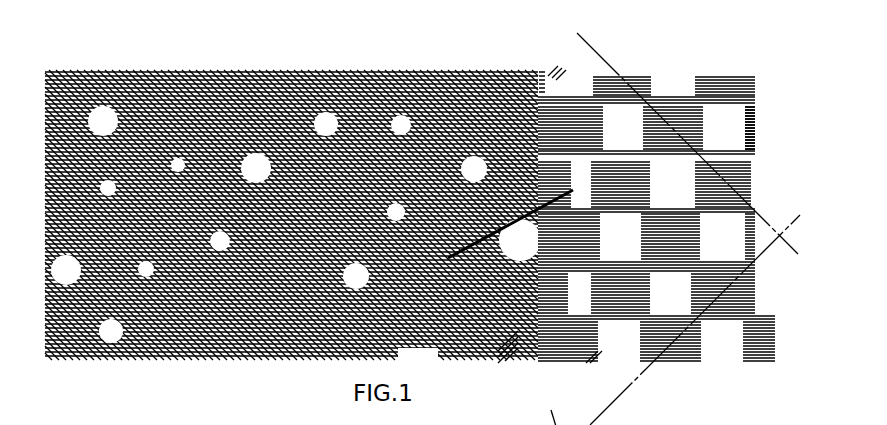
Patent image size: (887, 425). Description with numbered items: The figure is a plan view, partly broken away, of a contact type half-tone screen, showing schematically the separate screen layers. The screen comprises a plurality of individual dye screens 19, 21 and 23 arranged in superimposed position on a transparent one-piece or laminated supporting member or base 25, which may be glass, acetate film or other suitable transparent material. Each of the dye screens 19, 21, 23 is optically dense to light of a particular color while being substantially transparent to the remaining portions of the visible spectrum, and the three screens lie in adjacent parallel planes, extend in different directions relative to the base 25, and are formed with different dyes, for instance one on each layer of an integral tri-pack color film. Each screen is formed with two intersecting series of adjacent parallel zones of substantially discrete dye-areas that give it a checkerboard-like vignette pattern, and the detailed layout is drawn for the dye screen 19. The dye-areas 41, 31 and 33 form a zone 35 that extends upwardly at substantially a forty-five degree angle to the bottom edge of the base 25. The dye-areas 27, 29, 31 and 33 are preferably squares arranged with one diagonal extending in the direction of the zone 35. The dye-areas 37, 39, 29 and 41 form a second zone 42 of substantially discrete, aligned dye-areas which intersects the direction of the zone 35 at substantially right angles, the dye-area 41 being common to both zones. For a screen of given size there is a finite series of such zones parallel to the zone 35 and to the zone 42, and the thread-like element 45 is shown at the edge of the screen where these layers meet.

The dye screen 19 is at (752, 82).
The dye screen 21 is at (504, 357).
The dye screen 23 is at (265, 63).
The supporting member or base 25 is at (750, 302).
The dye-area 27 is at (757, 128).
The dye-area 29 is at (737, 167).
The dye-area 31 is at (697, 277).
The dye-area 33 is at (642, 328).
The zone 35 is at (621, 379).
The dye-area 37 is at (625, 73).
The dye-area 39 is at (657, 100).
The dye-area 41 is at (748, 222).
The second zone 42 is at (601, 51).
The binding thread 45 is at (569, 29).